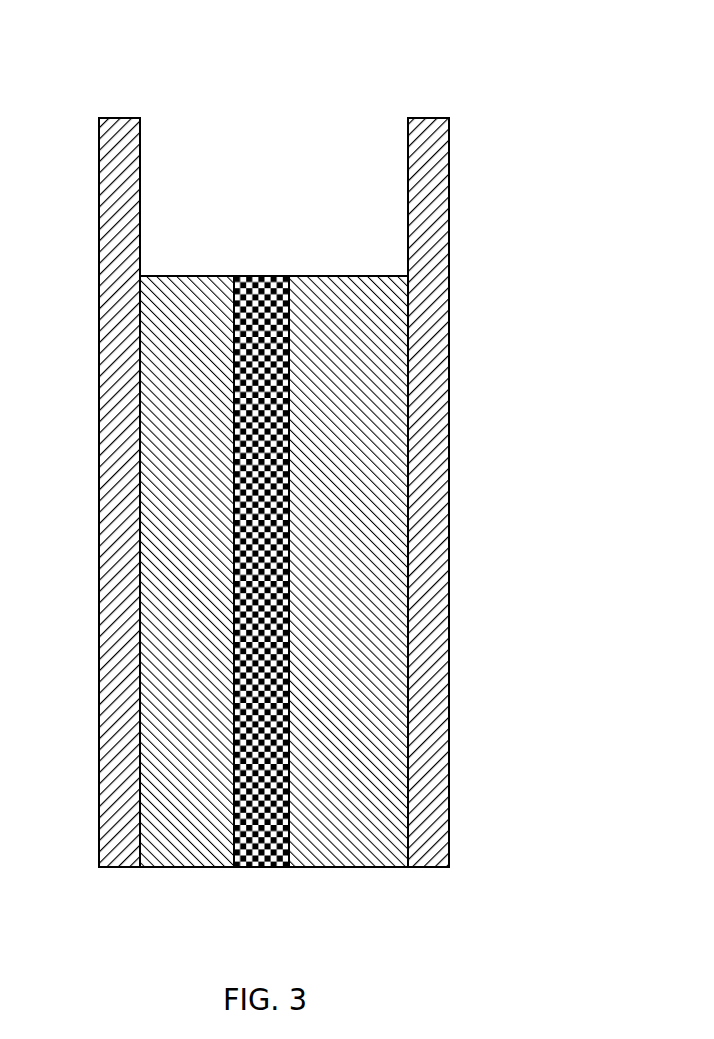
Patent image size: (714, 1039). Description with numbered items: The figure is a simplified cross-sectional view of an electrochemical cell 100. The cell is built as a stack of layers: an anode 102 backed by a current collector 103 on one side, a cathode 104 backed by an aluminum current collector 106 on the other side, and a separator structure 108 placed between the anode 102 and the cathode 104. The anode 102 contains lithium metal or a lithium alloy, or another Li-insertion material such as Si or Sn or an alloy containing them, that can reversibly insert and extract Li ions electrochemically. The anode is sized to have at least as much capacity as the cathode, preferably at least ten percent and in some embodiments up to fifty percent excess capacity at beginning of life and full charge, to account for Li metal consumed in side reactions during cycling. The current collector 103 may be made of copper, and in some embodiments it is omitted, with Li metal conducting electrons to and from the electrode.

The electrochemical cell 100 is at (296, 485).
The anode 102 is at (166, 868).
The current collector 103 is at (100, 237).
The cathode 104 is at (362, 868).
The aluminum current collector 106 is at (450, 178).
The separator structure 108 is at (247, 868).